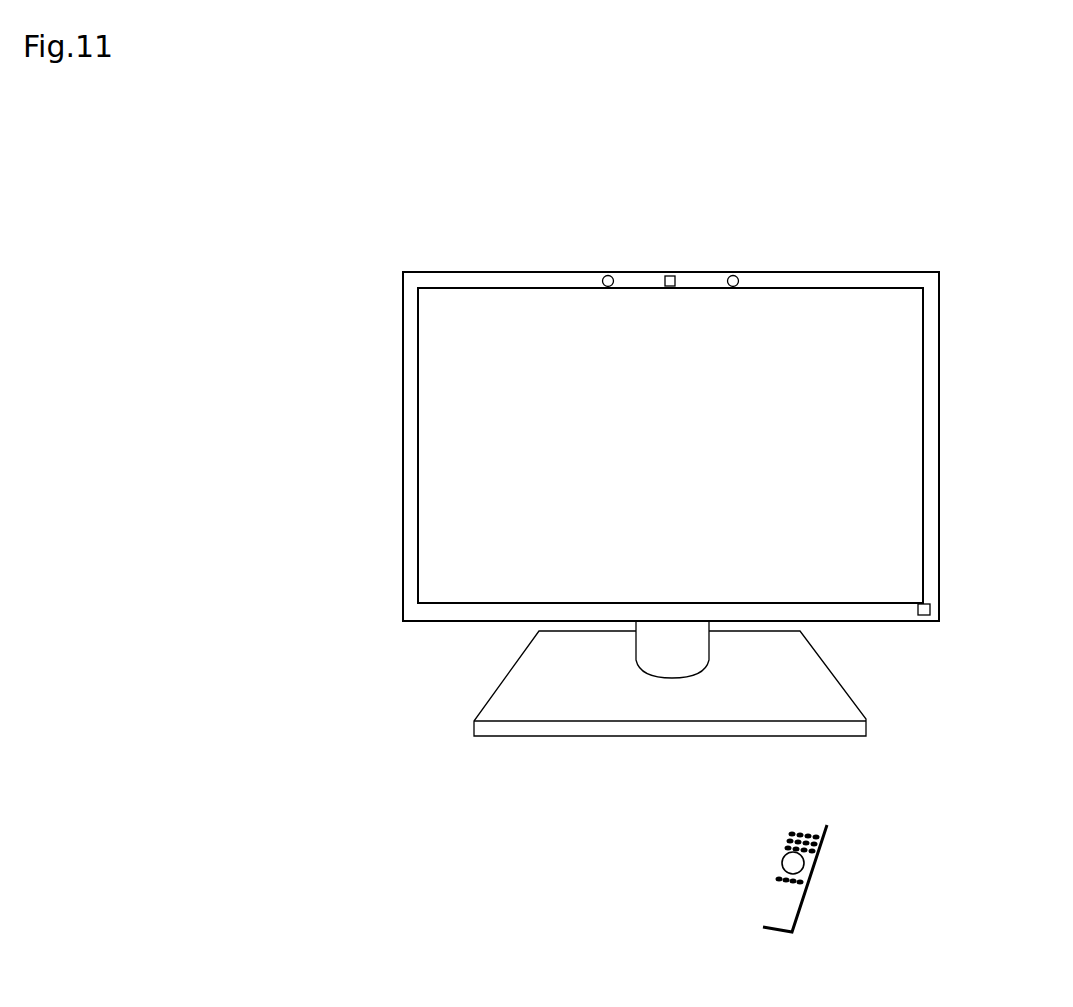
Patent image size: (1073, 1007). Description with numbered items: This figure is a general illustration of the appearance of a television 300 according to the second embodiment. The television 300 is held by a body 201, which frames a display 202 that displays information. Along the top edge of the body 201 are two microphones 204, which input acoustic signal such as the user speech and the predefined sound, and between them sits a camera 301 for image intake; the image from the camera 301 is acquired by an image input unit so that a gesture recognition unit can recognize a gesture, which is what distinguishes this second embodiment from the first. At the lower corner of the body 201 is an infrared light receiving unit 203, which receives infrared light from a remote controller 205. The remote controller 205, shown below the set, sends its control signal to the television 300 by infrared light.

The television 300 is at (393, 272).
The body 201 is at (410, 372).
The display 202 is at (866, 323).
The infrared light receiving unit 203 is at (932, 608).
The microphones 204 is at (606, 272).
The remote controller 205 is at (818, 807).
The camera 301 is at (673, 296).